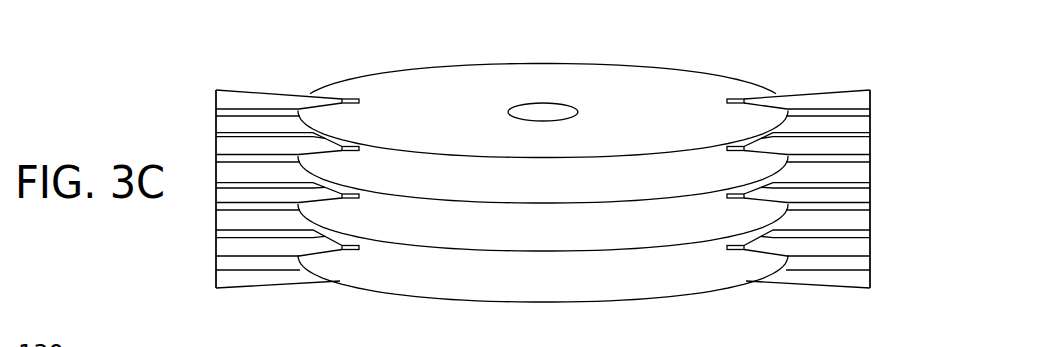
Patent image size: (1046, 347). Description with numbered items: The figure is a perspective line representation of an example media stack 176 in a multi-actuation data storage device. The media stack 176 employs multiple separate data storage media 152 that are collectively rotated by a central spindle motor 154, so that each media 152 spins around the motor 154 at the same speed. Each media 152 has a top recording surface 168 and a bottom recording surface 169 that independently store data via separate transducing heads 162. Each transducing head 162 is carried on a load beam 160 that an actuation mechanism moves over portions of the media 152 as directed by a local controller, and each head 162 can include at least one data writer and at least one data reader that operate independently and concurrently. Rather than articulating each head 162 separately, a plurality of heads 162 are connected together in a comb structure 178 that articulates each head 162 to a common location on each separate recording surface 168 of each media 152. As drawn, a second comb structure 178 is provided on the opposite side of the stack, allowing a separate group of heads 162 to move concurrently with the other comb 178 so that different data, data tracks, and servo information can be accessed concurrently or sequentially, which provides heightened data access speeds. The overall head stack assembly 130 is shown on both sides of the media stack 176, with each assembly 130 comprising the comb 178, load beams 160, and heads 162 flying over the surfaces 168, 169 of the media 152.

The head stack assembly 130 is at (288, 82).
The media 152 is at (558, 154).
The central spindle motor 154 is at (510, 102).
The load beam 160 is at (256, 296).
The transducing head 162 is at (361, 206).
The top recording surface 168 is at (649, 66).
The bottom recording surface 169 is at (399, 302).
The media stack 176 is at (836, 33).
The comb structure 178 is at (216, 98).